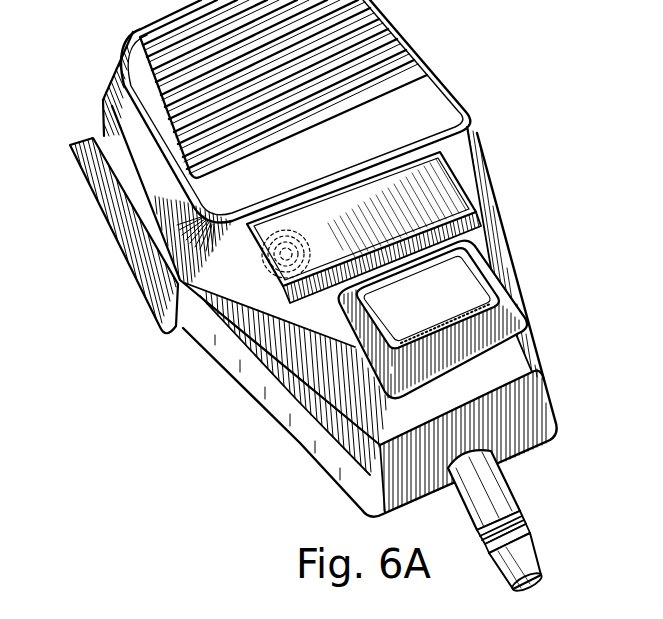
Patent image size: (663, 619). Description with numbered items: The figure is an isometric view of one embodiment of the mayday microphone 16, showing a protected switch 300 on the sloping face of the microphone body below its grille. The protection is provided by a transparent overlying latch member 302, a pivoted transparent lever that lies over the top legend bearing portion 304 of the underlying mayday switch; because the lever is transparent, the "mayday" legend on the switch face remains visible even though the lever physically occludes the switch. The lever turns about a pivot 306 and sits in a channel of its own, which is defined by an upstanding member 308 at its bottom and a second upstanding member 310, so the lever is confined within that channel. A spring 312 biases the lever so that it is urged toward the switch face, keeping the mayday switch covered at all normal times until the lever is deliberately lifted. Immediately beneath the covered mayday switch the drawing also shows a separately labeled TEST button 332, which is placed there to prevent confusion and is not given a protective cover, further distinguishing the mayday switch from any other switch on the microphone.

The mayday microphone 16 is at (446, 60).
The protected switch 300 is at (369, 289).
The transparent overlying latch member 302 is at (473, 188).
The top legend bearing portion 304 is at (470, 233).
The pivot 306 is at (270, 277).
The upstanding member 308 is at (290, 301).
The upstanding member 310 is at (415, 146).
The spring 312 is at (172, 304).
The TEST button 332 is at (460, 305).